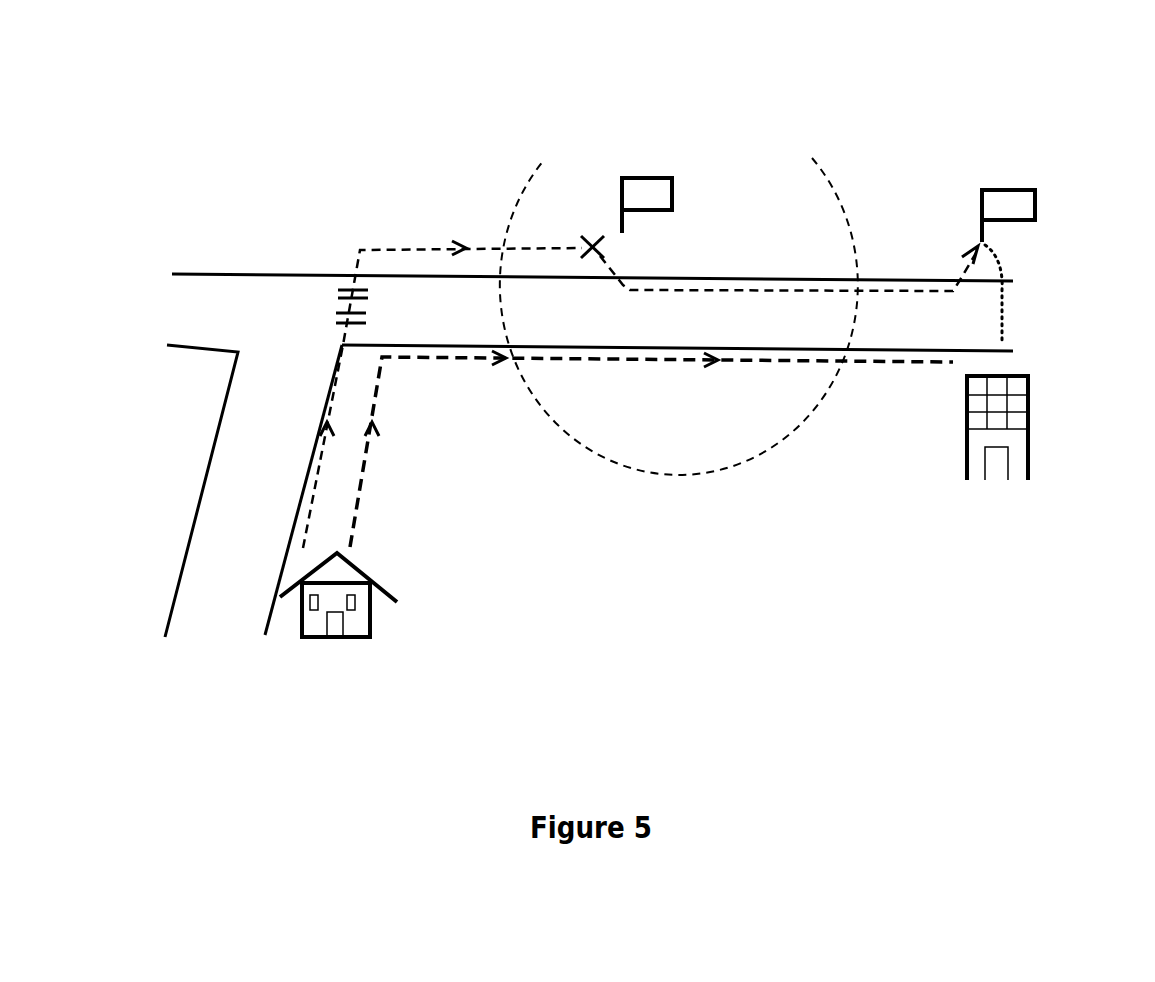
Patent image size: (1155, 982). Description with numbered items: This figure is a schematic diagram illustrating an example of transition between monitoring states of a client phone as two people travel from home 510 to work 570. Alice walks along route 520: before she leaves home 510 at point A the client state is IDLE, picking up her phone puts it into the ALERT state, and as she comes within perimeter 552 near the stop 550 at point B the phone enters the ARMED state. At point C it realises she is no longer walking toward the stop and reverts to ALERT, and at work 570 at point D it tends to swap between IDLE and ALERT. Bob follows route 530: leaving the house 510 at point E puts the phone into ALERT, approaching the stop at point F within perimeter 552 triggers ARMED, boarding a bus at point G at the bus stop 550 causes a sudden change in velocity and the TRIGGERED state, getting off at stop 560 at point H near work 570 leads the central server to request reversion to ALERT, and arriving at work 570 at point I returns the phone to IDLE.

The home 510 is at (353, 642).
The route 520 is at (372, 457).
The route 530 is at (407, 248).
The bus stop 550 is at (642, 178).
The perimeter 552 is at (823, 180).
The stop 560 is at (1000, 188).
The work 570 is at (1030, 440).